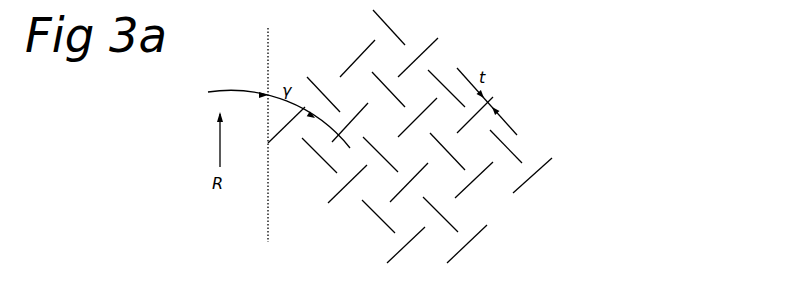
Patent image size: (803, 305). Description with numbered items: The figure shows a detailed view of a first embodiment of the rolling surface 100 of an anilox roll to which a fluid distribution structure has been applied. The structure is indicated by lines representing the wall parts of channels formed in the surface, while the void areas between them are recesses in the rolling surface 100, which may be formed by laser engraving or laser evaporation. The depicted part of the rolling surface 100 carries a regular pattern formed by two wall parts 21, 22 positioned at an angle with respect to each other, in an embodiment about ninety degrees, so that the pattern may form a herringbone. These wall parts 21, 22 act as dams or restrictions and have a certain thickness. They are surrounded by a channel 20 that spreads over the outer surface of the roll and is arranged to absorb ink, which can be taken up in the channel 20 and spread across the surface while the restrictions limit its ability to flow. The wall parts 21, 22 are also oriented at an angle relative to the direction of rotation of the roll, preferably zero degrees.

The rolling surface 100 is at (532, 53).
The first wall part 22 is at (395, 32).
The channel 20 is at (473, 150).
The second wall part 21 is at (472, 183).